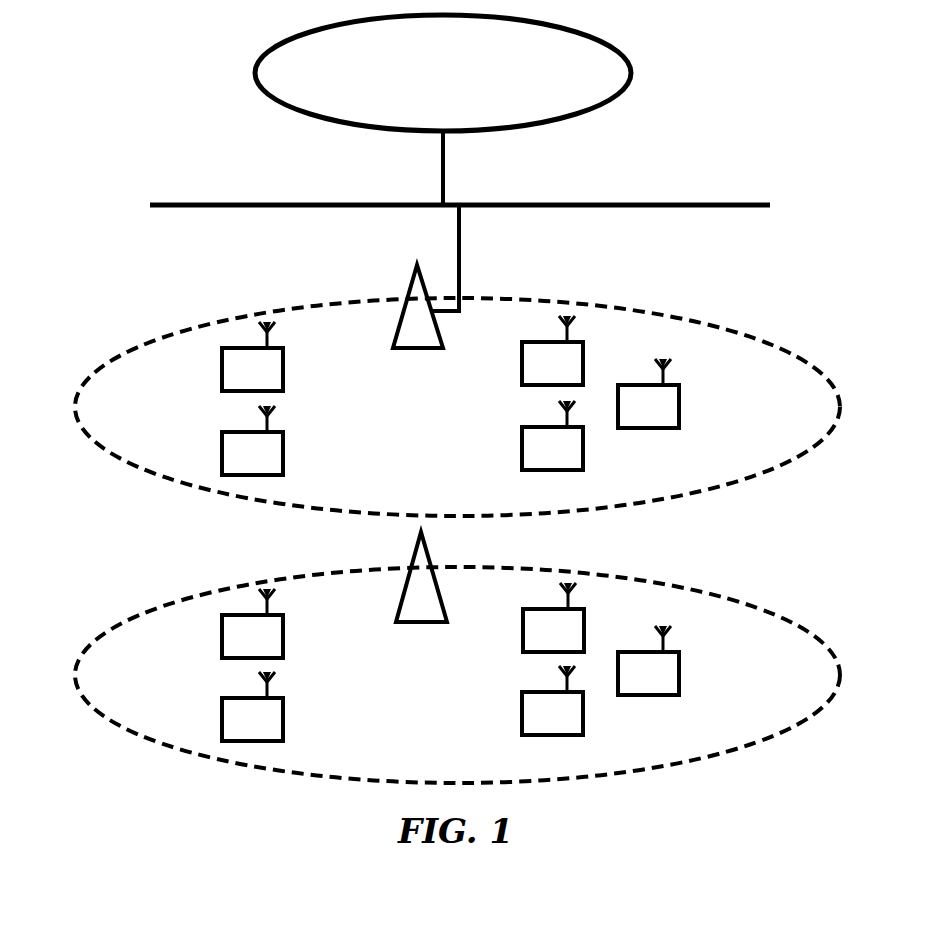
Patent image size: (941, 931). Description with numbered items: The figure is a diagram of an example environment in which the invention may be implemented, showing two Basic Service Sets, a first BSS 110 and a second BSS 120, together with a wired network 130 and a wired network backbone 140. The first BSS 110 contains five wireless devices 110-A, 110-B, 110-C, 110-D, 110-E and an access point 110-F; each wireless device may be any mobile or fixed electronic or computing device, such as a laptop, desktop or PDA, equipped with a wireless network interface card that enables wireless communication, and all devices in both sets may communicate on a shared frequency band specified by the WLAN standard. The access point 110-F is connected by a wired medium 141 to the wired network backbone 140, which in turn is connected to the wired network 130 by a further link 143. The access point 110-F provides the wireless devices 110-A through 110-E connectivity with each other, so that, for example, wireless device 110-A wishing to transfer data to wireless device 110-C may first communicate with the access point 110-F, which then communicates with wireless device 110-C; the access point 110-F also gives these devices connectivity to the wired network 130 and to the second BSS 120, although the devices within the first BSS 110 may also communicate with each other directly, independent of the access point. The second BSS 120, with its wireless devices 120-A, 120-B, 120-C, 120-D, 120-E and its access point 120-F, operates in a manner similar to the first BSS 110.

The wired network 130 is at (630, 75).
The wired network backbone 140 is at (673, 205).
The link between network and backbone 143 is at (446, 172).
The wired medium 141 is at (462, 268).
The Basic Service Set 110 is at (840, 386).
The wireless device 110-A is at (222, 455).
The wireless device 110-B is at (283, 365).
The wireless device 110-C is at (522, 368).
The wireless device 110-D is at (522, 447).
The wireless device 110-E is at (679, 406).
The access point 110-F is at (403, 300).
The Basic Service Set 120 is at (832, 648).
The wireless device 120-A is at (222, 720).
The wireless device 120-B is at (283, 632).
The wireless device 120-C is at (523, 632).
The wireless device 120-D is at (522, 713).
The wireless device 120-E is at (679, 672).
The access point 120-F is at (405, 577).